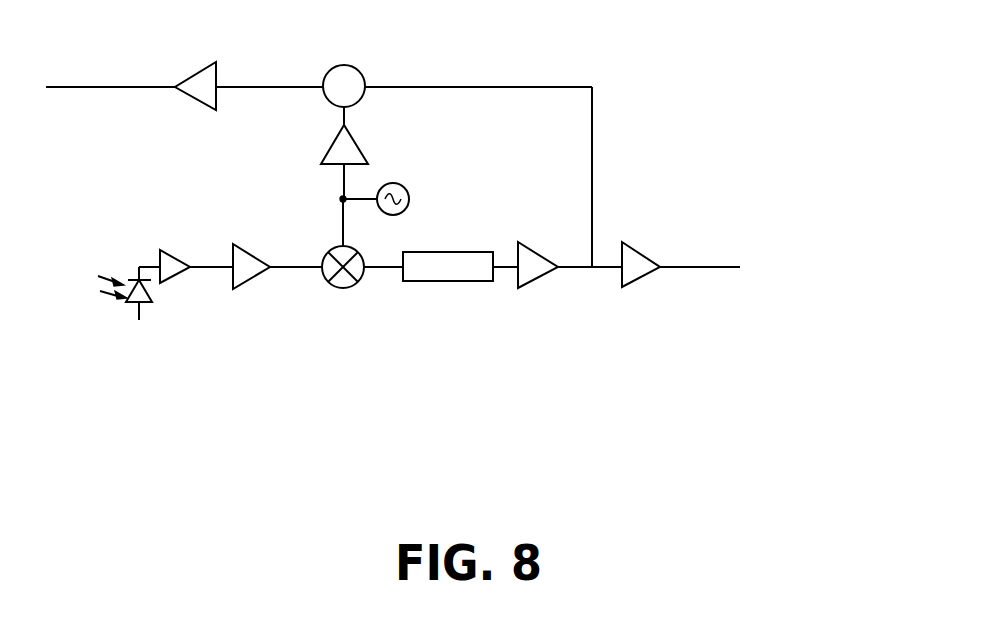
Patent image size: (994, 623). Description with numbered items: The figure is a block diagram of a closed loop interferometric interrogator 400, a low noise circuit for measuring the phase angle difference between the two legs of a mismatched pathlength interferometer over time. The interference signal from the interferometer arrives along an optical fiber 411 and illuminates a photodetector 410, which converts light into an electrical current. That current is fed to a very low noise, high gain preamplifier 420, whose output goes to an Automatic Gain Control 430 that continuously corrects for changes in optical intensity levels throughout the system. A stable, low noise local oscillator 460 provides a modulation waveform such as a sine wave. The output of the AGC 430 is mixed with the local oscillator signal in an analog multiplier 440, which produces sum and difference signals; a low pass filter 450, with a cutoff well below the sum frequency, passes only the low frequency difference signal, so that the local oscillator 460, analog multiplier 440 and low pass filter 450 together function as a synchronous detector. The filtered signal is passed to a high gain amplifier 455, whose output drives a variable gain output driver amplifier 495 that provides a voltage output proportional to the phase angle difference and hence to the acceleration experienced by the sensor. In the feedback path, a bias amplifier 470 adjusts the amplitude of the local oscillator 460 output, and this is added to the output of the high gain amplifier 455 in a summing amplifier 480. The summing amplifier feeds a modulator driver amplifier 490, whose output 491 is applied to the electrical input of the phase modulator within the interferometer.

The closed loop interferometric interrogator 400 is at (692, 368).
The photodetector 410 is at (139, 267).
The optical fiber 411 is at (100, 291).
The preamplifier 420 is at (173, 275).
The Automatic Gain Control (AGC) 430 is at (255, 280).
The analog multiplier 440 is at (345, 290).
The low pass filter 450 is at (452, 282).
The high gain amplifier 455 is at (540, 278).
The local oscillator 460 is at (405, 187).
The bias amplifier 470 is at (358, 143).
The summing amplifier 480 is at (362, 73).
The modulator driver amplifier 490 is at (218, 72).
The output of the modulator driver amplifier 491 is at (124, 87).
The variable gain output driver amplifier 495 is at (645, 252).